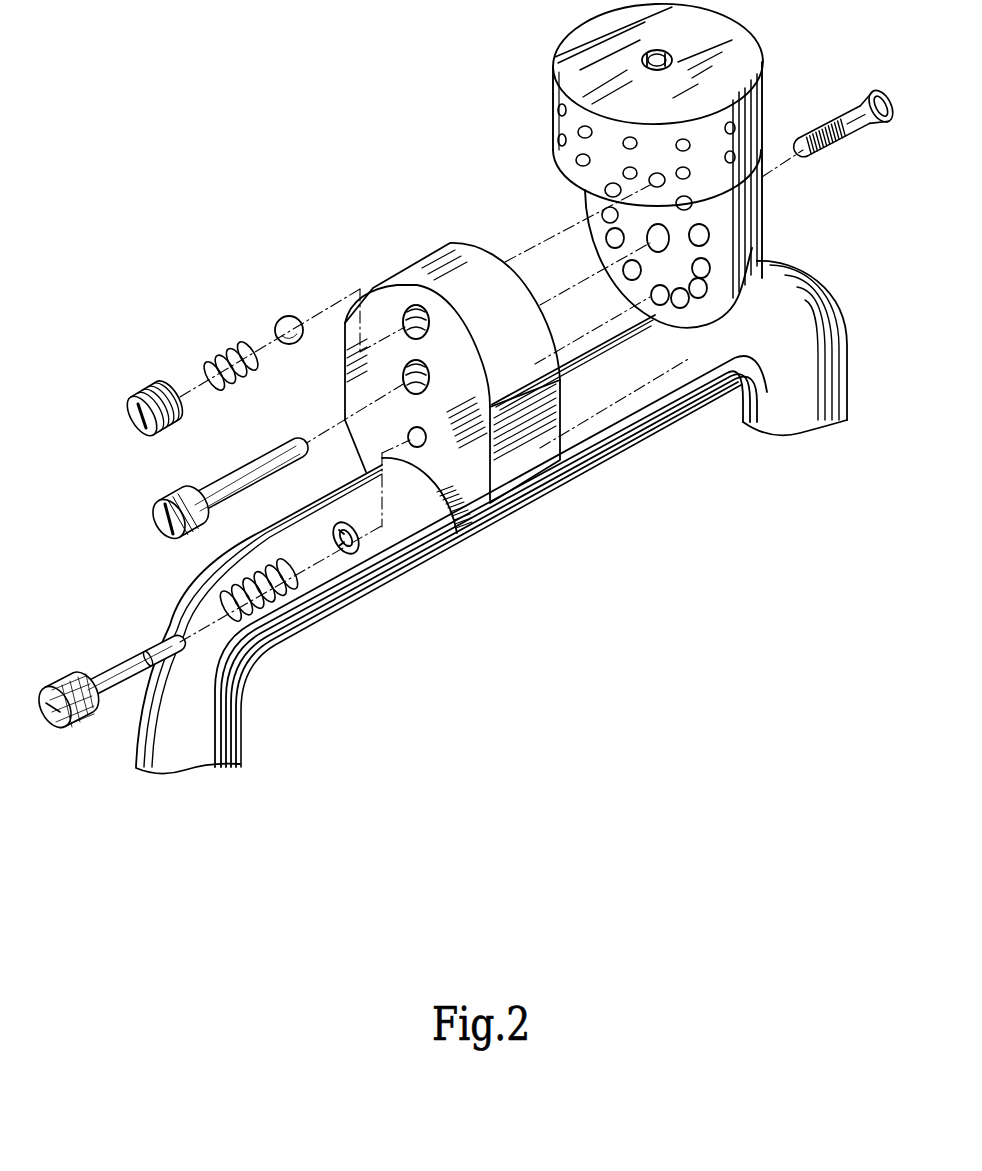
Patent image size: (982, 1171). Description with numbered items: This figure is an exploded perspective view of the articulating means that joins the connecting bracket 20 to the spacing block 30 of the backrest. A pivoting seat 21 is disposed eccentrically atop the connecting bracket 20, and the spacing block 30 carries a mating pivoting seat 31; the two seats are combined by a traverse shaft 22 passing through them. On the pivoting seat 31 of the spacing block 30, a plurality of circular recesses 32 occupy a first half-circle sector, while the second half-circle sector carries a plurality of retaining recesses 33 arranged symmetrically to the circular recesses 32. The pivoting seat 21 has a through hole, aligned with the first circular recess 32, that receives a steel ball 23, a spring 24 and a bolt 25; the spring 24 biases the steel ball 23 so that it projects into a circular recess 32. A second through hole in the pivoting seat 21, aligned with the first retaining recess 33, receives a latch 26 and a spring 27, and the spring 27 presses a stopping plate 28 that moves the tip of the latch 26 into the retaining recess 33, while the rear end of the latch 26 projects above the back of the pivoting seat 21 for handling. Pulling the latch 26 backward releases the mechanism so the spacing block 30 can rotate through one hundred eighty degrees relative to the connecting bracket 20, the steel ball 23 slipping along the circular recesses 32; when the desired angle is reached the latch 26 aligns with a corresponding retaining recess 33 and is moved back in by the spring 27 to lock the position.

The connecting bracket 20 is at (205, 713).
The pivoting seat 21 is at (520, 383).
The traverse shaft 22 is at (202, 498).
The steel ball 23 is at (285, 316).
The spring 24 is at (222, 352).
The bolt 25 is at (140, 394).
The latch 26 is at (117, 672).
The spring 27 is at (274, 600).
The stopping plate 28 is at (357, 552).
The spacing block 30 is at (553, 100).
The pivoting seat 31 is at (680, 315).
The circular recesses 32 is at (610, 238).
The retaining recesses 33 is at (702, 237).